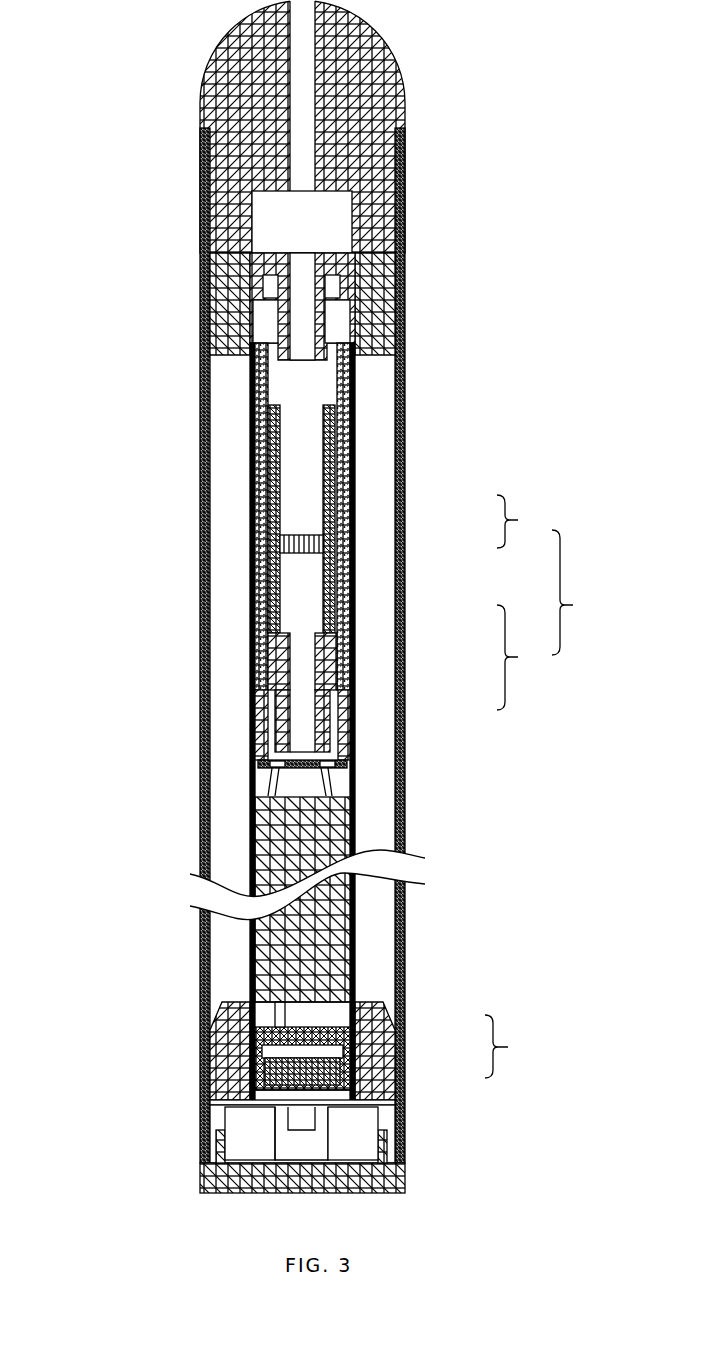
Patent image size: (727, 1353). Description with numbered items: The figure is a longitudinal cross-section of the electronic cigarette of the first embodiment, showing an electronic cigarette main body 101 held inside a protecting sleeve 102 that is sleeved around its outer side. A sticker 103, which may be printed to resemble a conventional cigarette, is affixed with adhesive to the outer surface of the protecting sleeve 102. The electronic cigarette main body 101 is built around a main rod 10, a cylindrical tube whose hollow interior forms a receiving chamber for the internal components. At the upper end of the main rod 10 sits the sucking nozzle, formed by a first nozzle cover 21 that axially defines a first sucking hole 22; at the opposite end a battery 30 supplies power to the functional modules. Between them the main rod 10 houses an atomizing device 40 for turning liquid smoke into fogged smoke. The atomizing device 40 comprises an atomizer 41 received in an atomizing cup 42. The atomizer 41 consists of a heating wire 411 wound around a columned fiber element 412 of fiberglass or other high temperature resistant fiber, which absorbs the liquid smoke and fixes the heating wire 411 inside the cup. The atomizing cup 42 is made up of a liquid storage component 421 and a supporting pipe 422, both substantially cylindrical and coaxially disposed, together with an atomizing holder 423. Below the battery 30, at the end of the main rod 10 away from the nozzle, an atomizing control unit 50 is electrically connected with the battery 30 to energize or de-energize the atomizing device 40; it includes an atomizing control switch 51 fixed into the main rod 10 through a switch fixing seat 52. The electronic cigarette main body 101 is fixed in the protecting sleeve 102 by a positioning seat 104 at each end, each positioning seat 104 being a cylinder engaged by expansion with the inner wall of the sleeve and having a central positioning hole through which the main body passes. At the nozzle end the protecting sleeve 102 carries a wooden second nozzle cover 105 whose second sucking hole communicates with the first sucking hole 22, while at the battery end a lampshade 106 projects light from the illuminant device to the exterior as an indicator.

The main rod 10 is at (357, 785).
The first nozzle cover 21 is at (330, 267).
The first sucking hole 22 is at (303, 320).
The battery 30 is at (320, 938).
The atomizing device 40 is at (577, 592).
The atomizer 41 is at (522, 521).
The heating wire 411 is at (357, 519).
The fiber element 412 is at (357, 546).
The atomizing cup 42 is at (522, 657).
The liquid storage component 421 is at (357, 612).
The supporting pipe 422 is at (357, 644).
The atomizing holder 423 is at (357, 710).
The atomizing control unit 50 is at (511, 1046).
The atomizing control switch 51 is at (330, 1068).
The switch fixing seat 52 is at (353, 1040).
The electronic cigarette main body 101 is at (250, 640).
The protecting sleeve 102 is at (200, 420).
The sticker 103 is at (200, 533).
The positioning seat 104 is at (232, 308).
The second nozzle cover 105 is at (233, 100).
The lampshade 106 is at (230, 1180).